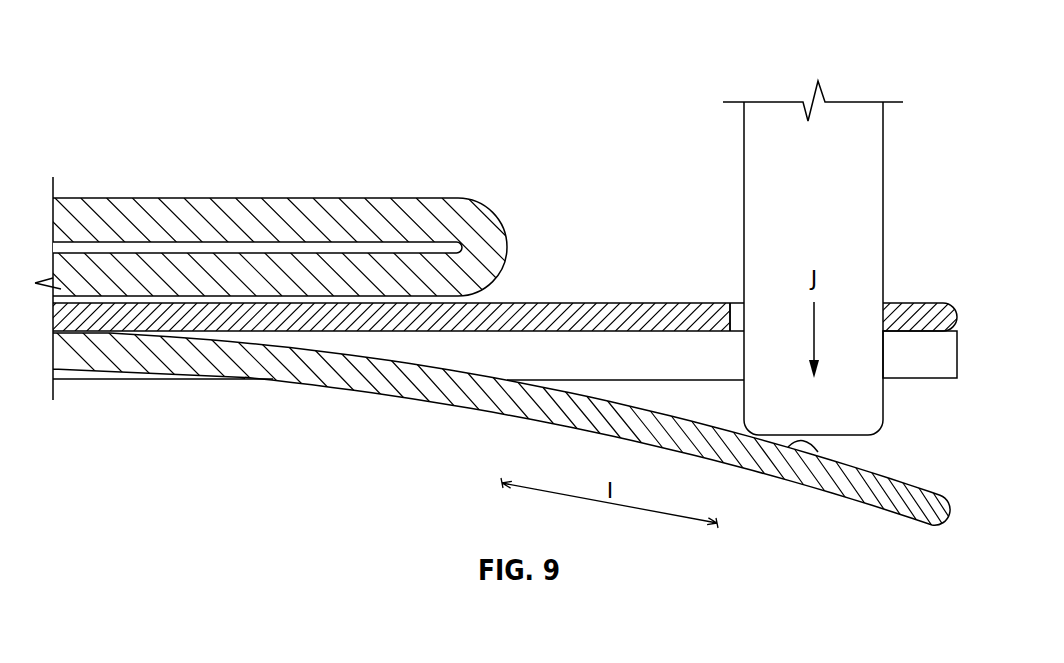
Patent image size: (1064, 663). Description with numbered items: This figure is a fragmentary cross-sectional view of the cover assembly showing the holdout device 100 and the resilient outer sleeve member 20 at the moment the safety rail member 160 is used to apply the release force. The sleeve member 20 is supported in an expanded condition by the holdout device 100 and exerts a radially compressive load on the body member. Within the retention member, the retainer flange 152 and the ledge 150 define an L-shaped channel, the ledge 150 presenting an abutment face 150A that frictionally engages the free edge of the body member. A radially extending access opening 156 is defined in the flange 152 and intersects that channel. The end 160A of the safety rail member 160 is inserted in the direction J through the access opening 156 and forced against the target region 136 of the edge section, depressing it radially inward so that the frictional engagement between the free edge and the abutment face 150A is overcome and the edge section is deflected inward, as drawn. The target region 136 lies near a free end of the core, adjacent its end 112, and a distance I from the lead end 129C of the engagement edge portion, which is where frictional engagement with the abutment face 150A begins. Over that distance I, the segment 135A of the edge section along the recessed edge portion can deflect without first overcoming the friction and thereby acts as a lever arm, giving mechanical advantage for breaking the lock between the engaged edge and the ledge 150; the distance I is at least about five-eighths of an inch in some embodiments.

The holdout device 100 is at (190, 72).
The resilient outer sleeve member 20 is at (415, 213).
The ledge 150 is at (117, 380).
The abutment face 150A is at (572, 347).
The retainer wall or flange 152 is at (616, 313).
The access opening 156 is at (740, 312).
The safety rail member 160 is at (890, 197).
The end of safety rail member 160A is at (847, 437).
The first end of core 112 is at (958, 352).
The lead end of engagement edge portion 129C is at (517, 413).
The segment of edge section 135A is at (633, 440).
The target region 136 is at (818, 452).